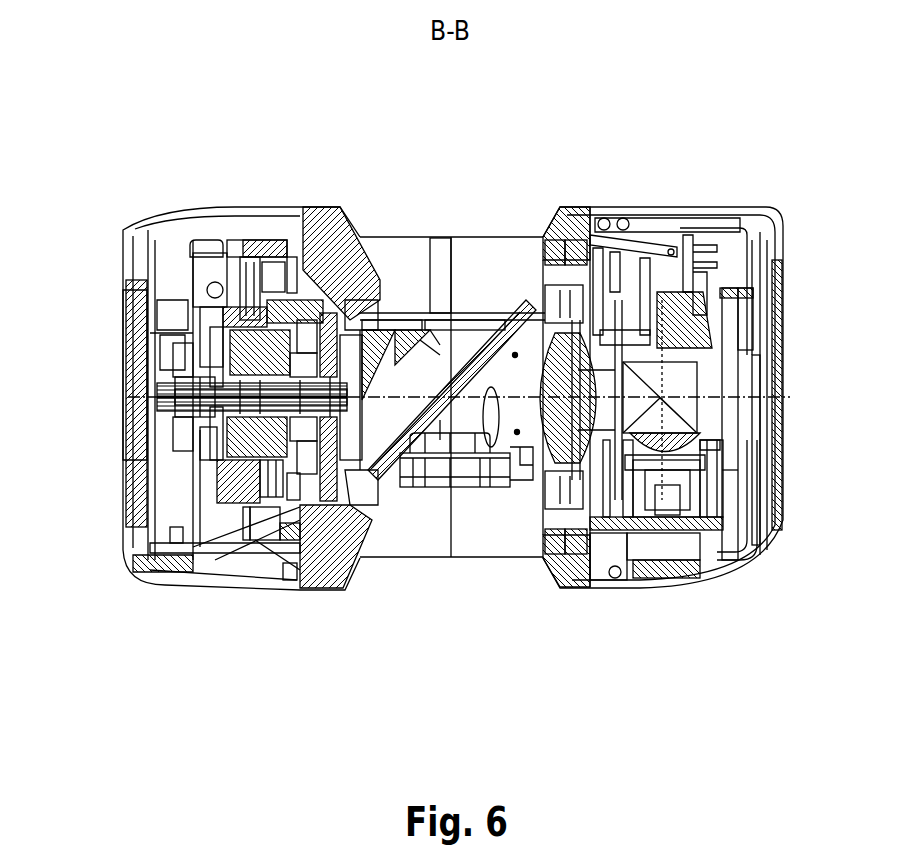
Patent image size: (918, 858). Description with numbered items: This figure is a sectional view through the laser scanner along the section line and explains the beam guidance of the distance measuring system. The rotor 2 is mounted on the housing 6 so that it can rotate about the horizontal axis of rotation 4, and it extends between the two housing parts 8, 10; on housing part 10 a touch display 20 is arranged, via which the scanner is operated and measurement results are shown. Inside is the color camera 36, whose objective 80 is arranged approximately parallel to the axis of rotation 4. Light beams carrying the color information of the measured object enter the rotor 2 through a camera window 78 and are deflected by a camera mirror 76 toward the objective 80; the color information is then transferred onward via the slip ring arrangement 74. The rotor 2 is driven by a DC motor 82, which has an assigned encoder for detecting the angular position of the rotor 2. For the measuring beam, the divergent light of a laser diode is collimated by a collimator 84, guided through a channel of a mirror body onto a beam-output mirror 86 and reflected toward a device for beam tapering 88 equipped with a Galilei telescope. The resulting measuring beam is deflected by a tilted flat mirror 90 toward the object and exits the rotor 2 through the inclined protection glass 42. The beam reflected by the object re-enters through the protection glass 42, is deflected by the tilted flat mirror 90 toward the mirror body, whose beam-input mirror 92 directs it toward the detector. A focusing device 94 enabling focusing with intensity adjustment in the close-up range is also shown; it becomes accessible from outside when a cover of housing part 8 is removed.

The rotor 2 is at (497, 295).
The axis of rotation 4 is at (495, 420).
The housing 6 is at (652, 204).
The housing part 8 is at (783, 237).
The housing part 10 is at (157, 212).
The touch display 20 is at (127, 460).
The color camera 36 is at (382, 345).
The protection glass 42 is at (513, 485).
The slip ring arrangement 74 is at (183, 388).
The camera mirror 76 is at (472, 300).
The camera window 78 is at (482, 295).
The objective 80 is at (403, 340).
The DC motor 82 is at (193, 336).
The collimator 84 is at (705, 337).
The beam-output mirror 86 is at (700, 400).
The device for beam tapering 88 is at (640, 385).
The tilted flat mirror 90 is at (450, 412).
The beam-input mirror 92 is at (722, 440).
The focusing device 94 is at (700, 470).